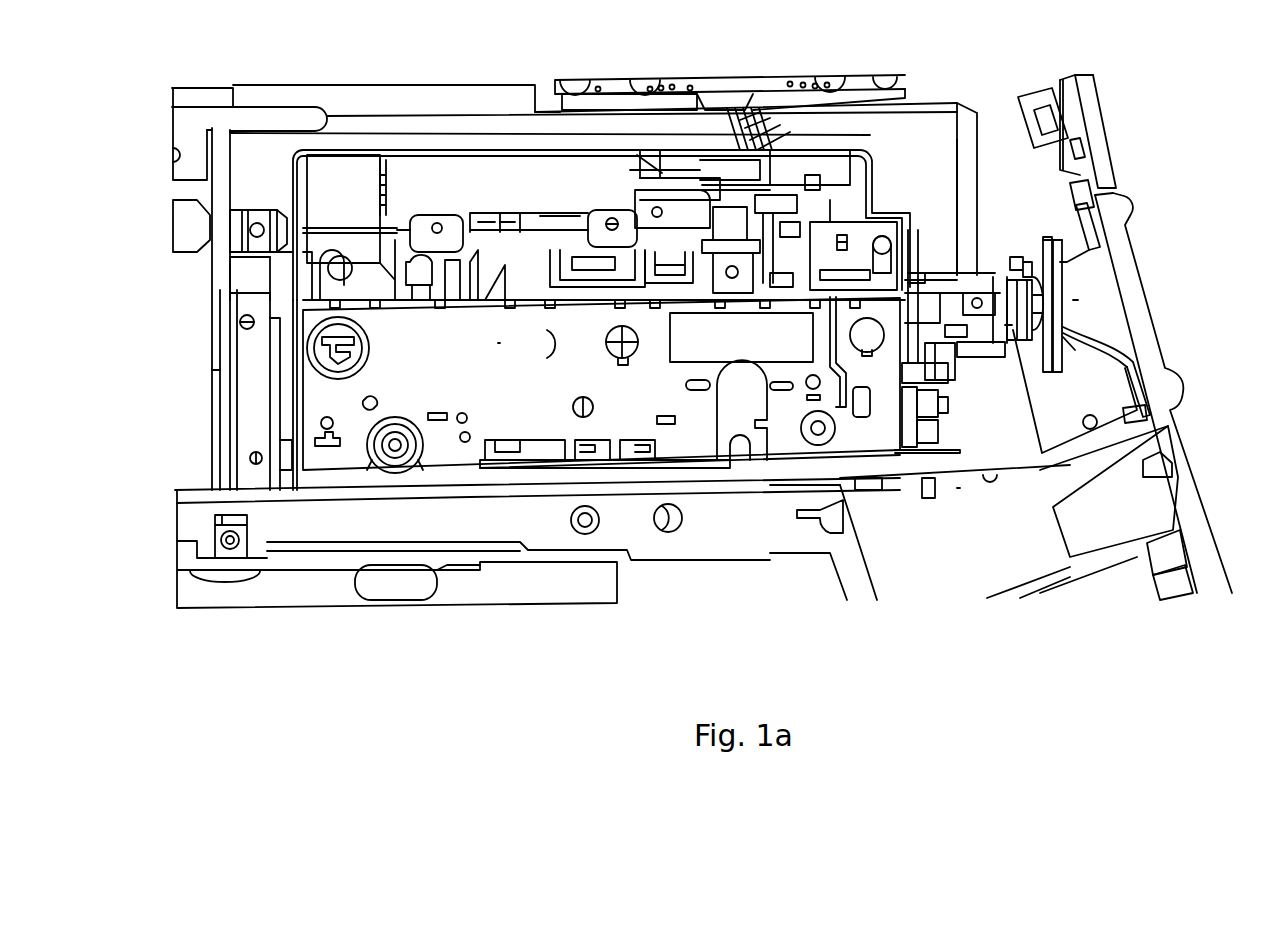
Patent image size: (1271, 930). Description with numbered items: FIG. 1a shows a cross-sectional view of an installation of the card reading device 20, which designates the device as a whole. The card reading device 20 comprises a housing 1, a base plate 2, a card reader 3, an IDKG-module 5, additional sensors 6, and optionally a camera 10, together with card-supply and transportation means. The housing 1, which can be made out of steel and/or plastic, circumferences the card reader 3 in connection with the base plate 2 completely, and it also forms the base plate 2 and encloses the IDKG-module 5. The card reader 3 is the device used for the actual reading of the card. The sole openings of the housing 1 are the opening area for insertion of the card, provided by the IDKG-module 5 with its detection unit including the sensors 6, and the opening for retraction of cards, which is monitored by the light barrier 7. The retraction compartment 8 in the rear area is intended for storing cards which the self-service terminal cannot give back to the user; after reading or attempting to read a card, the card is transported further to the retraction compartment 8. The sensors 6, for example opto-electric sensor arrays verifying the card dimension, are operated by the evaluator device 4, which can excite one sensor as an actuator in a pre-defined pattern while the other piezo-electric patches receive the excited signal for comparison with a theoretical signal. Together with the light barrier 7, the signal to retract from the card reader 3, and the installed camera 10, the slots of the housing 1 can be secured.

The card reading device 20 is at (618, 74).
The housing 1 is at (962, 178).
The base plate 2 is at (981, 511).
The card reader 3 is at (522, 348).
The evaluator device 4 is at (670, 178).
The IDKG-module 5 is at (1097, 297).
The sensors 6 is at (1015, 325).
The light barrier 7 is at (252, 333).
The retraction compartment 8 is at (198, 389).
The camera 10 is at (1052, 237).